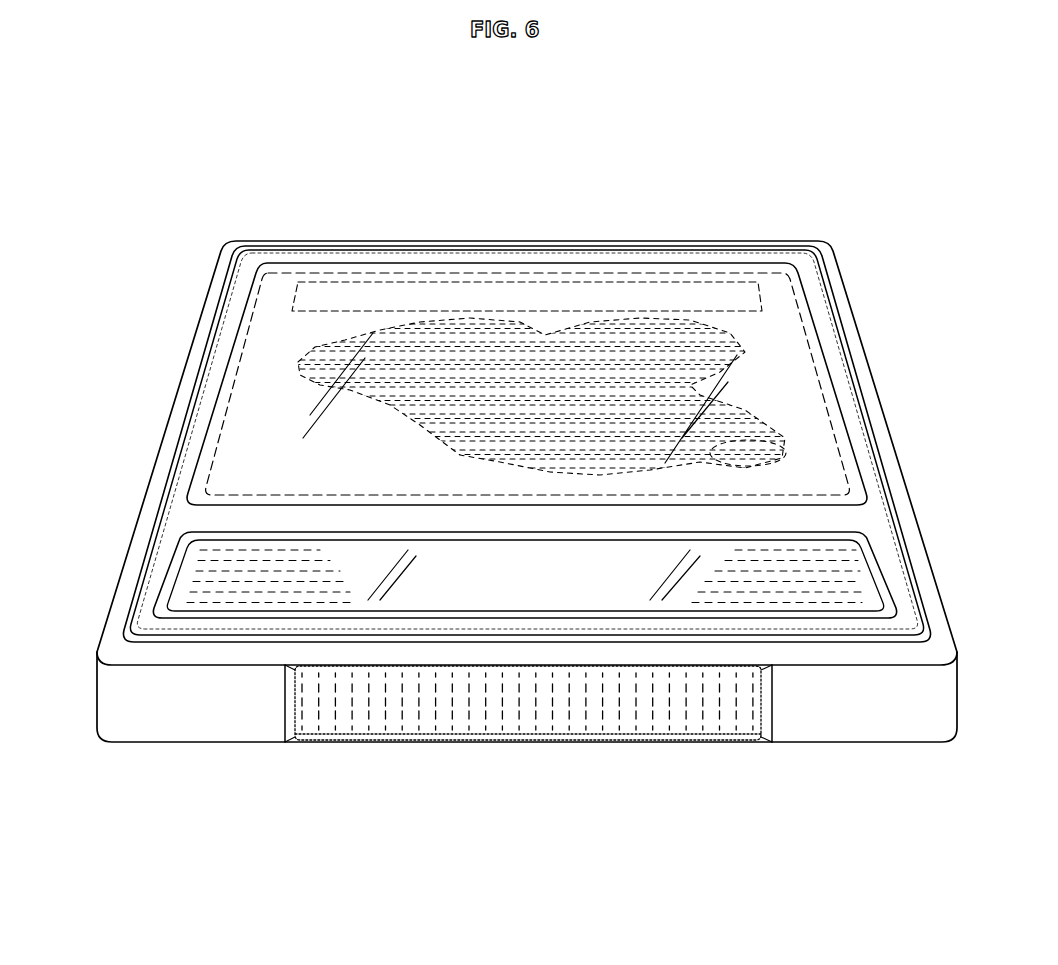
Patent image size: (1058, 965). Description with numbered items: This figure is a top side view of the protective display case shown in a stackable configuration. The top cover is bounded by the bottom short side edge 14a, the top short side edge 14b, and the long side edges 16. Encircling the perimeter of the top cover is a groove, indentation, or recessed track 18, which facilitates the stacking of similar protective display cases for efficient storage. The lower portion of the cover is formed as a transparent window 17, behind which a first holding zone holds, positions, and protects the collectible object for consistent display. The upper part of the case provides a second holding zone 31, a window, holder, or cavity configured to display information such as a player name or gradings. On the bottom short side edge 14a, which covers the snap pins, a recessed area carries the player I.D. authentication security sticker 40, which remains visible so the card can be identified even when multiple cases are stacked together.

The bottom short side edge 14a is at (213, 730).
The top short side edge 14b is at (399, 242).
The long side edges 16 is at (178, 382).
The transparent window 17 is at (782, 337).
The recessed track 18 is at (805, 256).
The second holding zone 31 is at (197, 563).
The player I.D. security sticker 40 is at (673, 723).